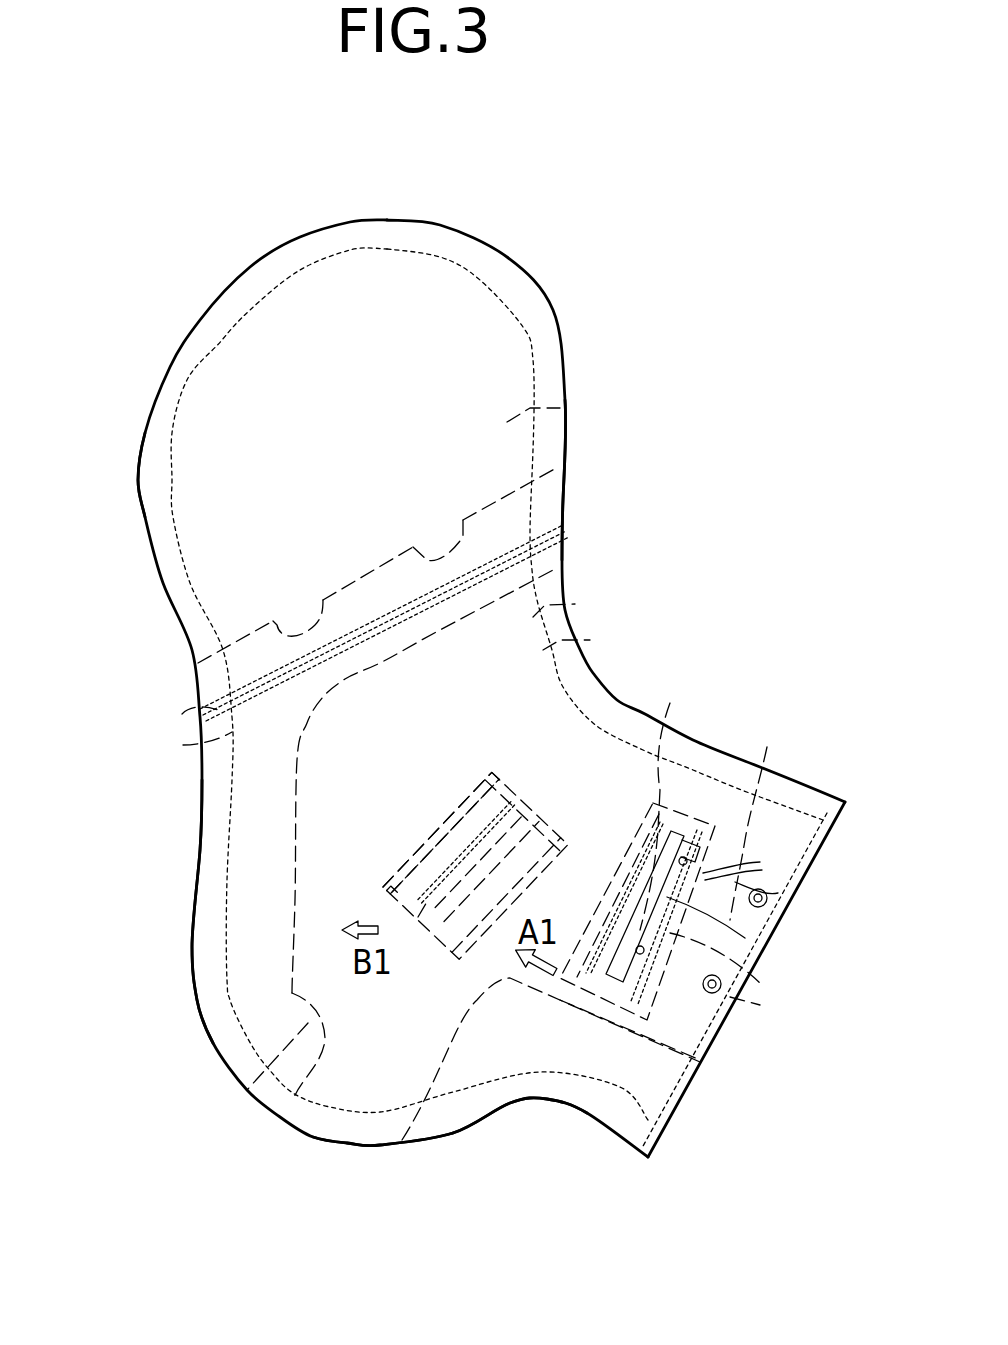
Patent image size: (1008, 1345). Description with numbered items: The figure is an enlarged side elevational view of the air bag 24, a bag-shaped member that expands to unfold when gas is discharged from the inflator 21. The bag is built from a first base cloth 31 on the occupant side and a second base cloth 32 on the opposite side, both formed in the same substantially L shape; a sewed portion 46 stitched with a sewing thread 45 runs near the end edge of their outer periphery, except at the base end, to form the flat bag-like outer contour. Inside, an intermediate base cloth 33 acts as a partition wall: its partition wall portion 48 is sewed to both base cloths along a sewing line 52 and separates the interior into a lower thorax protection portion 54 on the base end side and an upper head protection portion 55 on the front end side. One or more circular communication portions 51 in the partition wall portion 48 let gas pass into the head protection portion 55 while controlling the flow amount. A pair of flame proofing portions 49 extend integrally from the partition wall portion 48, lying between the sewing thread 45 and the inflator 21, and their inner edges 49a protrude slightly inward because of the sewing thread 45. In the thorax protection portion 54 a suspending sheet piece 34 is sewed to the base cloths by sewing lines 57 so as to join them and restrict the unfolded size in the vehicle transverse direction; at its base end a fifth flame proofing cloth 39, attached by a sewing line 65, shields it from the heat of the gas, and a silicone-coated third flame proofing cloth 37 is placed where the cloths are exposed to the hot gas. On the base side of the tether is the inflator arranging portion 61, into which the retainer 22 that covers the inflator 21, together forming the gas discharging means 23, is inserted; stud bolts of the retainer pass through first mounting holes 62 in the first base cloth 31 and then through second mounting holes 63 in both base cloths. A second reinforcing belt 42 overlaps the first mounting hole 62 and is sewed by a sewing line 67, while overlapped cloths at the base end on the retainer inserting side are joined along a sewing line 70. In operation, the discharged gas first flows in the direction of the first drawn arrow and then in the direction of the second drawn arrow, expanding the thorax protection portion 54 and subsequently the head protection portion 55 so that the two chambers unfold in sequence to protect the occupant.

The air bag 24 is at (545, 297).
The first base cloth 31 is at (507, 365).
The second base cloth 32 is at (560, 408).
The intermediate base cloth 33 is at (507, 523).
The sewed portion 46 is at (575, 604).
The sewing thread 45 is at (590, 640).
The head protection portion 55 is at (198, 484).
The communication portion 51 is at (283, 622).
The partition wall portion 48 is at (430, 633).
The sewing line 52 is at (183, 745).
The suspending sheet piece 34 is at (450, 803).
The fifth flame proofing cloth 39 is at (507, 775).
The sewing lines 57 is at (418, 917).
The sewing line 65 is at (551, 1059).
The flame proofing portion 49 is at (238, 933).
The first and second edges 49a is at (293, 1100).
The thorax protection portion 54 is at (378, 1087).
The third flame proofing cloth 37 is at (508, 1050).
The sewing line 67 is at (710, 796).
The first mounting holes 62 is at (684, 857).
The retainer 22 is at (760, 862).
The gas discharging means 23 is at (778, 893).
The second mounting holes 63 is at (767, 900).
The inflator 21 is at (745, 938).
The inflator arranging portion 61 is at (760, 983).
The sewing line 70 is at (760, 1005).
The second reinforcing belt 42 is at (670, 1010).